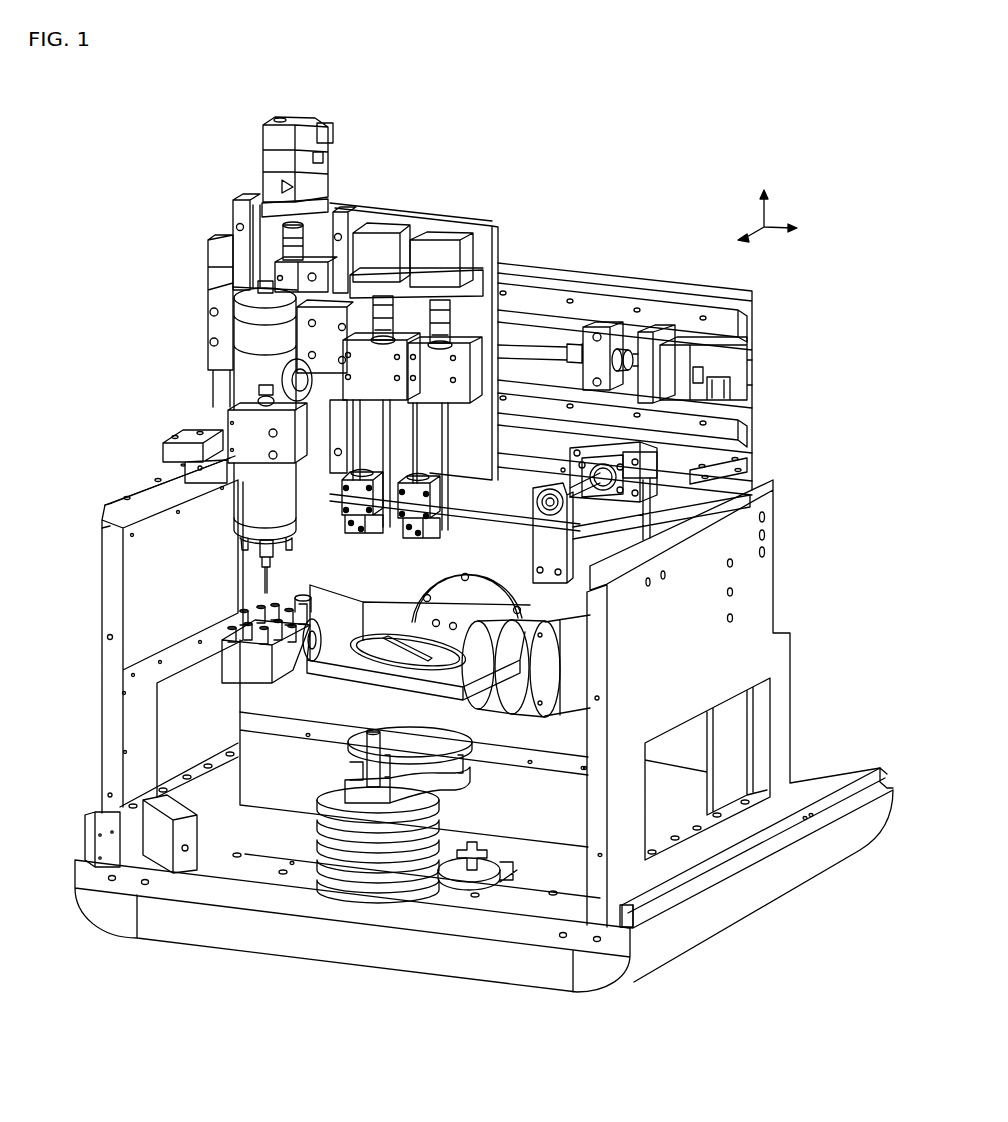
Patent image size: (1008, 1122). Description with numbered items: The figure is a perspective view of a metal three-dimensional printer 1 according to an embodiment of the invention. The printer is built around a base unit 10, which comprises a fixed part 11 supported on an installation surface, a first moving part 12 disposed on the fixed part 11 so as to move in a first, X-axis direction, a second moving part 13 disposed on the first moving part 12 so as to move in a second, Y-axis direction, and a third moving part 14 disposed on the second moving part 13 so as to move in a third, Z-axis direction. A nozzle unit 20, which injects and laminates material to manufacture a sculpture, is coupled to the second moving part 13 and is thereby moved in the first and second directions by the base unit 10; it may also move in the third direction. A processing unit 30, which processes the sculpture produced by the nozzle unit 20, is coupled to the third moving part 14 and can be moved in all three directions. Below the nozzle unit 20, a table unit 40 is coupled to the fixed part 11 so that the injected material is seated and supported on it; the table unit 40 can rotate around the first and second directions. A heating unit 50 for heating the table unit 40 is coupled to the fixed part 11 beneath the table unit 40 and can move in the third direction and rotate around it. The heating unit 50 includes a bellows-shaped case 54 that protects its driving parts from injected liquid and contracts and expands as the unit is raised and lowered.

The metal 3D printer 1 is at (628, 134).
The base unit 10 is at (787, 469).
The fixed part 11 is at (773, 587).
The first moving part 12 is at (753, 338).
The second moving part 13 is at (498, 240).
The third moving part 14 is at (207, 297).
The nozzle unit 20 is at (408, 200).
The processing unit 30 is at (225, 385).
The table unit 40 is at (520, 727).
The heating unit 50 is at (368, 895).
The case 54 is at (403, 873).